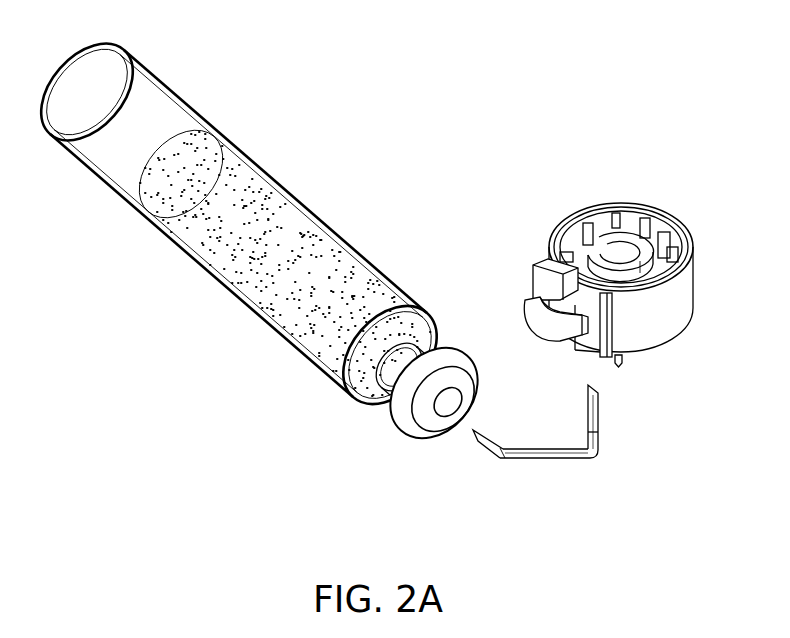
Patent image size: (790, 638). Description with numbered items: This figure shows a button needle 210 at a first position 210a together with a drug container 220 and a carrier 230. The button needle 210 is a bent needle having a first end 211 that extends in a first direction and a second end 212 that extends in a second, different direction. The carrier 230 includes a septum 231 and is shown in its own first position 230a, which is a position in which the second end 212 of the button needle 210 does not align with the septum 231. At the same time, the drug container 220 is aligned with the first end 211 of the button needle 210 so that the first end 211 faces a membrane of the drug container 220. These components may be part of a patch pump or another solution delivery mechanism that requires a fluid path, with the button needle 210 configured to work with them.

The drug container 220 is at (178, 96).
The carrier 230 is at (613, 235).
The first position 230a is at (604, 201).
The septum 231 is at (527, 296).
The button needle 210 is at (547, 458).
The first position 210a is at (547, 441).
The first end 211 is at (473, 432).
The second end 212 is at (590, 388).